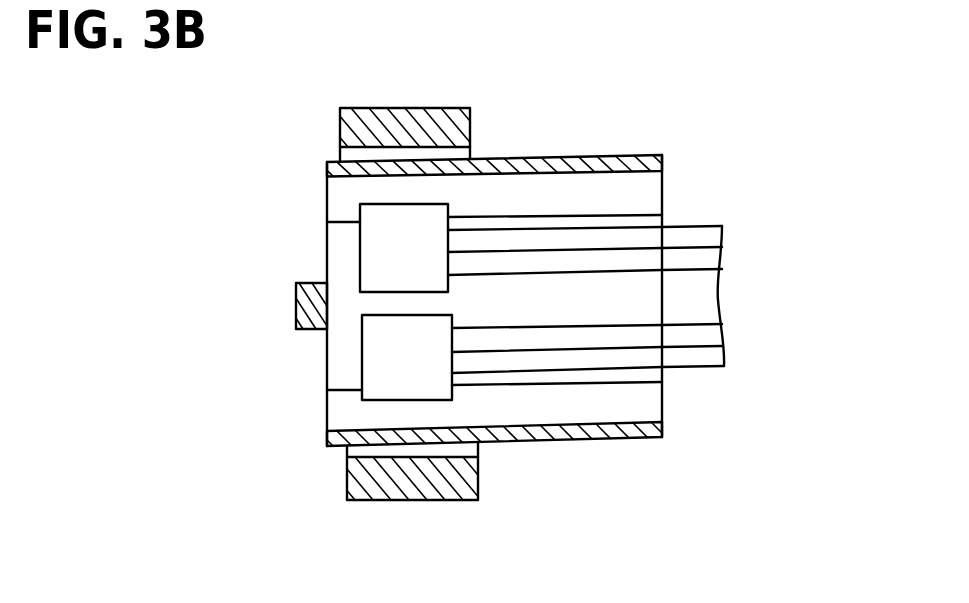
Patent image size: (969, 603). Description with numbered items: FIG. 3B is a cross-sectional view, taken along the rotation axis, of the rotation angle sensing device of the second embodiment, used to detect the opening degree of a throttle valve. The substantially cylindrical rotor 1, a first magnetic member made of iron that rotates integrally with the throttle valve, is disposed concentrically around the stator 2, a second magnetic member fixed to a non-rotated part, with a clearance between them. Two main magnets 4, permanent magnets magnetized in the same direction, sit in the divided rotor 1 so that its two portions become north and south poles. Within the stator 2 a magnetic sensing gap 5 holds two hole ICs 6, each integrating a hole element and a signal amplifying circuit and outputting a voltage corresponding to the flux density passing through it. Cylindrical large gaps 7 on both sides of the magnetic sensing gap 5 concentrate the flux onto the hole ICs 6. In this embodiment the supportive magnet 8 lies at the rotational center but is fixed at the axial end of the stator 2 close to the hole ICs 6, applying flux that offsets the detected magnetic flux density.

The rotor 1 is at (586, 200).
The stator 2 is at (494, 245).
The main magnets 4 is at (387, 109).
The magnetic sensing gap 5 is at (345, 340).
The hole ICs 6 is at (362, 331).
The large gaps 7 is at (390, 192).
The supportive magnet 8 is at (306, 310).